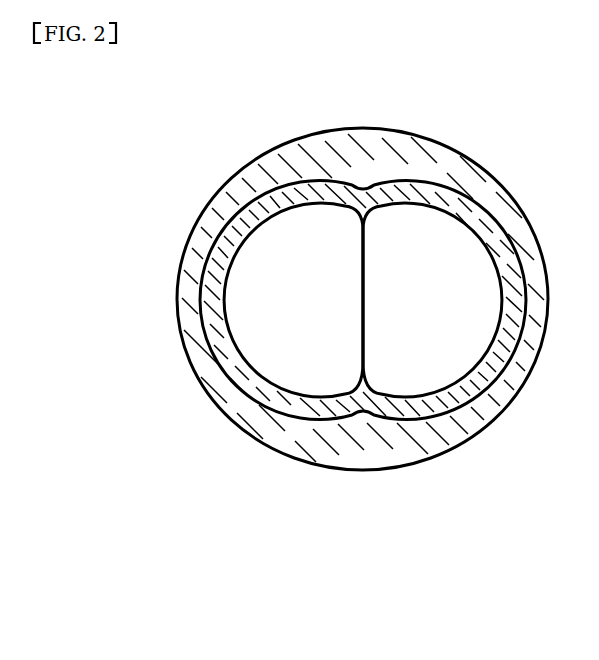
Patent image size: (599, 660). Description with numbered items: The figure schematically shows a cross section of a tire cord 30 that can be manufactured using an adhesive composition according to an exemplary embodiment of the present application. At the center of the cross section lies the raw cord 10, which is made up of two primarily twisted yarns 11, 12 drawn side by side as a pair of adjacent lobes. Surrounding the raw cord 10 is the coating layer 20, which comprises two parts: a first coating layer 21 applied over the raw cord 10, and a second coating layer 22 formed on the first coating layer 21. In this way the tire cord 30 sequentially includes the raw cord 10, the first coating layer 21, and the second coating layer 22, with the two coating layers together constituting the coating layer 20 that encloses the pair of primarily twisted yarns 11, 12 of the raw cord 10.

The tire cord 30 is at (362, 367).
The coating layer 20 is at (362, 347).
The first coating layer 21 is at (272, 397).
The second coating layer 22 is at (302, 440).
The raw cord 10 is at (363, 385).
The primarily twisted yarn 11 is at (313, 345).
The primarily twisted yarn 12 is at (412, 340).